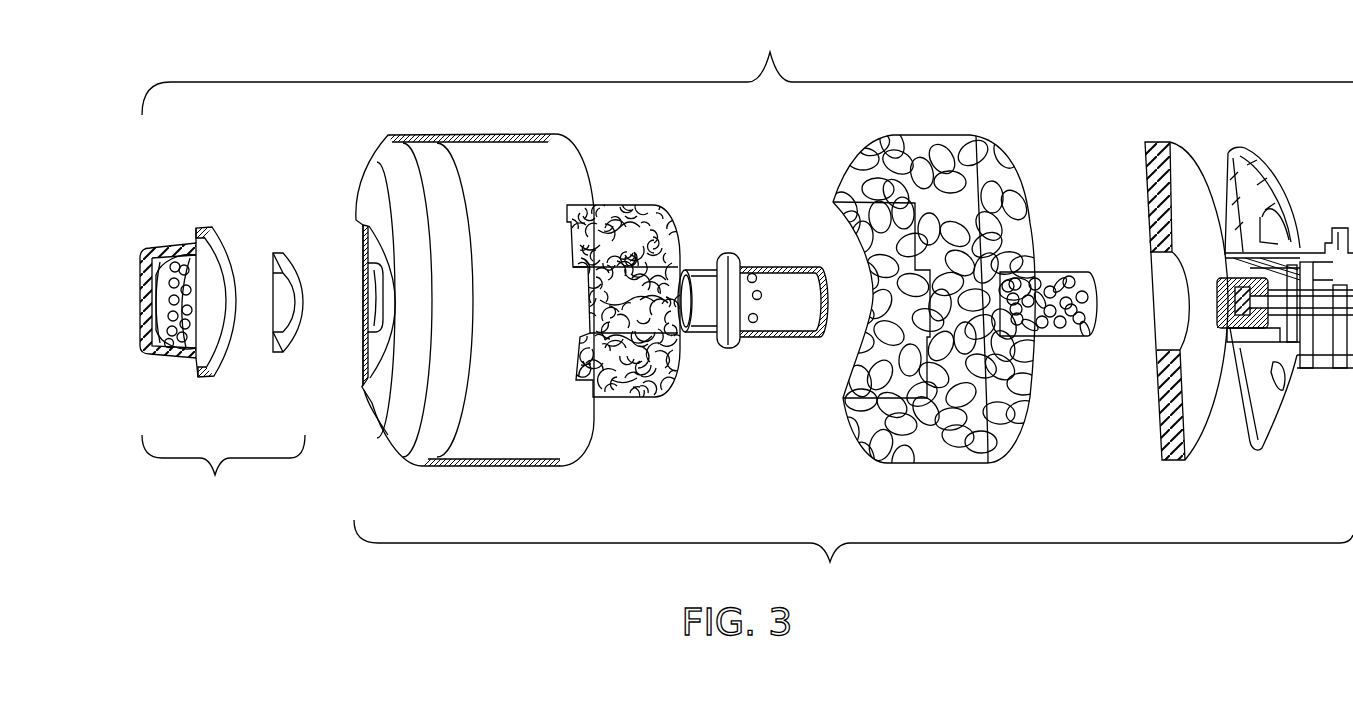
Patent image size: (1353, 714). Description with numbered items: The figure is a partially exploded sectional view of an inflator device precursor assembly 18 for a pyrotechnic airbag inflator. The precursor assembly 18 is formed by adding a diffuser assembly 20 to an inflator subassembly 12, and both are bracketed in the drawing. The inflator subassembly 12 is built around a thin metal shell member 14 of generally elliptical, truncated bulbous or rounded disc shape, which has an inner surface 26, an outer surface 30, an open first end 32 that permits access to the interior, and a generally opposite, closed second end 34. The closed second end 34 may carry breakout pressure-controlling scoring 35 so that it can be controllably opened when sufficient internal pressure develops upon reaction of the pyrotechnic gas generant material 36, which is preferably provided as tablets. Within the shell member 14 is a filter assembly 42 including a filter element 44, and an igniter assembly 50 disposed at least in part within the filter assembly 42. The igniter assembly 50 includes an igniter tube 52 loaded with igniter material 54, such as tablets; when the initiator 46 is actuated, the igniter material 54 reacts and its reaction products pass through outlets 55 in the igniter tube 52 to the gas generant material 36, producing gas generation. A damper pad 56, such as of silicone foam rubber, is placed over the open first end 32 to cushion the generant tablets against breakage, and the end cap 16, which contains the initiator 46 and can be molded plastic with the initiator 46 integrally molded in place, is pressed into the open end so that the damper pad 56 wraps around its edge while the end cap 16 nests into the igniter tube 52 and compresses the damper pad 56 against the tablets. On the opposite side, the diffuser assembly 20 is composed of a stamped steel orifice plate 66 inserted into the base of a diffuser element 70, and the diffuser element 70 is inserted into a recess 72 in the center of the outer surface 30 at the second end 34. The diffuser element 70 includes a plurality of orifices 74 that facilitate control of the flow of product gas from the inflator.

The inflator subassembly 12 is at (853, 555).
The shell member 14 is at (471, 313).
The end cap 16 is at (1233, 321).
The inflator device precursor assembly 18 is at (747, 70).
The diffuser assembly 20 is at (223, 471).
The inner surface 26 is at (494, 452).
The outer surface 30 is at (536, 470).
The first end 32 is at (588, 165).
The second end 34 is at (362, 380).
The breakout pressure-controlling scoring 35 is at (362, 330).
The pyrotechnic gas generant material 36 is at (923, 455).
The filter assembly 42 is at (648, 349).
The filter element 44 is at (673, 380).
The initiator 46 is at (1218, 290).
The igniter assembly 50 is at (753, 293).
The igniter tube 52 is at (788, 342).
The igniter material 54 is at (1068, 272).
The outlets 55 is at (747, 340).
The damper pad 56 is at (1162, 450).
The orifice plate 66 is at (278, 252).
The diffuser element 70 is at (188, 279).
The recess 72 is at (365, 240).
The orifices 74 is at (162, 360).